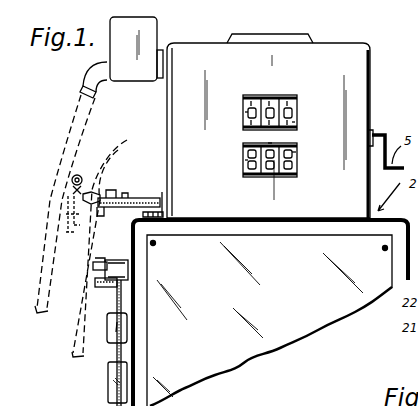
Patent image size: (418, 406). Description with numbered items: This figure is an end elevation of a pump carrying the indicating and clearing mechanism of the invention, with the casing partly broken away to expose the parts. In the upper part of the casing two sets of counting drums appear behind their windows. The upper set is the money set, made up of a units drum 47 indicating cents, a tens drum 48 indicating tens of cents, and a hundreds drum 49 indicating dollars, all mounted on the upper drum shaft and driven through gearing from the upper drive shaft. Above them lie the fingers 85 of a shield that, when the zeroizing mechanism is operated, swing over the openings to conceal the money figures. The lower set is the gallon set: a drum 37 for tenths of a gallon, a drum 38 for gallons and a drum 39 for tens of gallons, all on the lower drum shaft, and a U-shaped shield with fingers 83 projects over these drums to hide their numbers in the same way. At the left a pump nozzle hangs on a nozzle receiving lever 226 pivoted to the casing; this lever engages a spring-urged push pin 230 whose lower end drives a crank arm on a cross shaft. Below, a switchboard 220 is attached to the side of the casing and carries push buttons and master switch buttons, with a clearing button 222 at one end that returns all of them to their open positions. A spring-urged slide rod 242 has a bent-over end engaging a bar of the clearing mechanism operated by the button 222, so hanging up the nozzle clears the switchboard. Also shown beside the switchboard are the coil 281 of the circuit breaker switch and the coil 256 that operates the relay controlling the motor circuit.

The fingers 85 is at (283, 98).
The hundreds drum 49 is at (245, 117).
The units drum 47 is at (293, 123).
The tens drum 48 is at (268, 128).
The gallon counting drum 38 is at (270, 147).
The gallon counting drum 39 is at (245, 161).
The gallon counting drum 37 is at (297, 153).
The fingers 83 is at (280, 177).
The push pin 230 is at (167, 210).
The nozzle receiving lever 226 is at (133, 198).
The button 222 is at (92, 266).
The switchboard 220 is at (122, 270).
The slide rod 242 is at (107, 287).
The coil 281 is at (102, 349).
The coil 256 is at (98, 396).